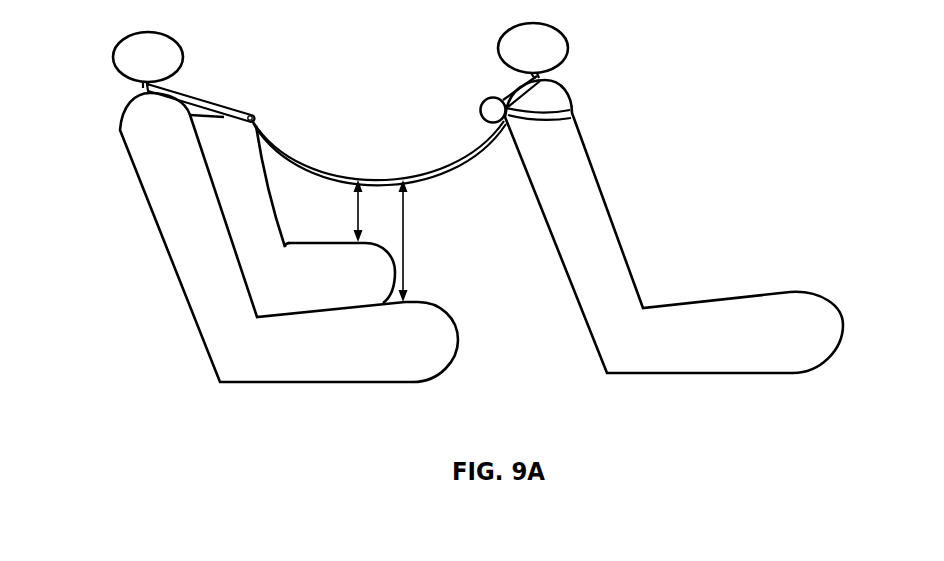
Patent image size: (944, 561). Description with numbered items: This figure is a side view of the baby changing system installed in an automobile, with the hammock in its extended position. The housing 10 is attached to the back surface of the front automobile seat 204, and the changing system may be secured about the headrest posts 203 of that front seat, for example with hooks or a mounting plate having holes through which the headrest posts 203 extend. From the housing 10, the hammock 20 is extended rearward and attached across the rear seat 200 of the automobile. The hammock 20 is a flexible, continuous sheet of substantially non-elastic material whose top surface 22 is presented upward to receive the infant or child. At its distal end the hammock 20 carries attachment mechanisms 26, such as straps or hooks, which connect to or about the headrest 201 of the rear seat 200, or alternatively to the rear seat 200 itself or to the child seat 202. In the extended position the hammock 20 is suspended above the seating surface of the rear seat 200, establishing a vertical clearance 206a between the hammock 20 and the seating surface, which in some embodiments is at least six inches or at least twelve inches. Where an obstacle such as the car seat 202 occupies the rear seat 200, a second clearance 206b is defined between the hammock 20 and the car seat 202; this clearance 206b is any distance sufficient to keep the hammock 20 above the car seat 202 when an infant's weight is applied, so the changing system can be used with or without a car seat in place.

The housing 10 is at (495, 97).
The hammock 20 is at (467, 160).
The top surface 22 is at (380, 170).
The attachment mechanisms 26 is at (217, 100).
The rear seat 200 is at (155, 217).
The headrest 201 is at (113, 49).
The car seat 202 is at (273, 300).
The headrest posts 203 is at (143, 87).
The front automobile seat 204 is at (592, 162).
The clearance 206a is at (431, 241).
The clearance 206b is at (331, 211).